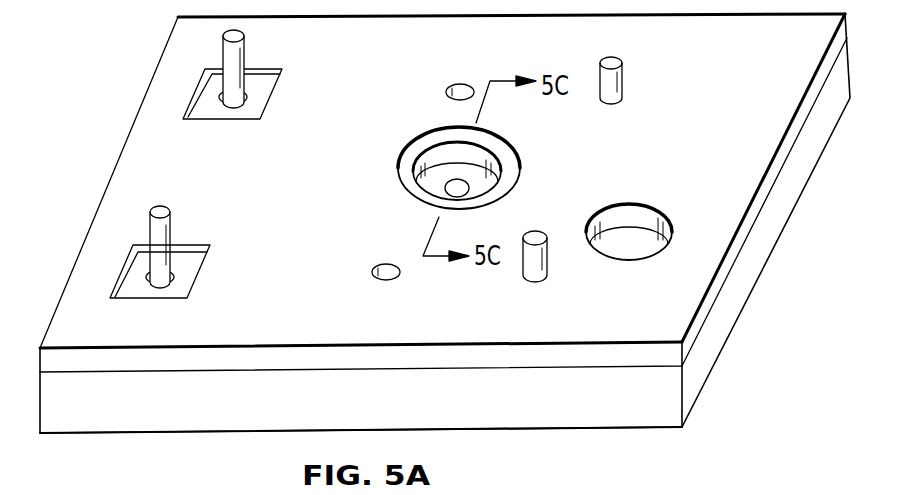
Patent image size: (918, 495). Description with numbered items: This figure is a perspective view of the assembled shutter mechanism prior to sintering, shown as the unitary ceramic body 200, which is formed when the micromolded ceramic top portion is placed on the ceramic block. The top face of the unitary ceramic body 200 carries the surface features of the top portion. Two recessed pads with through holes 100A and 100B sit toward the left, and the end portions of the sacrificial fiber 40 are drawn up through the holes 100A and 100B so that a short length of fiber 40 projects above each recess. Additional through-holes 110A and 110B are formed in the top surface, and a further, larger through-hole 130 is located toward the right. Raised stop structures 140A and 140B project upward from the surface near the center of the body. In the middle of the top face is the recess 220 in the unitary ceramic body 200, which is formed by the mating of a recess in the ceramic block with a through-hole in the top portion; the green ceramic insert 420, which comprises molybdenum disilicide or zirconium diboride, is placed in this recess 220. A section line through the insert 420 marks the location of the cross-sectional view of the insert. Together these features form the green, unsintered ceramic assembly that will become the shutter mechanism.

The sacrificial fiber 40 is at (227, 60).
The through hole 100A is at (252, 92).
The through hole 100B is at (185, 265).
The through-hole 110A is at (457, 83).
The through-hole 110B is at (386, 281).
The through-hole 130 is at (633, 204).
The raised stop structure 140A is at (623, 82).
The raised stop structure 140B is at (549, 257).
The unitary ceramic body 200 is at (717, 398).
The recess 220 is at (427, 143).
The green ceramic insert 420 is at (515, 161).